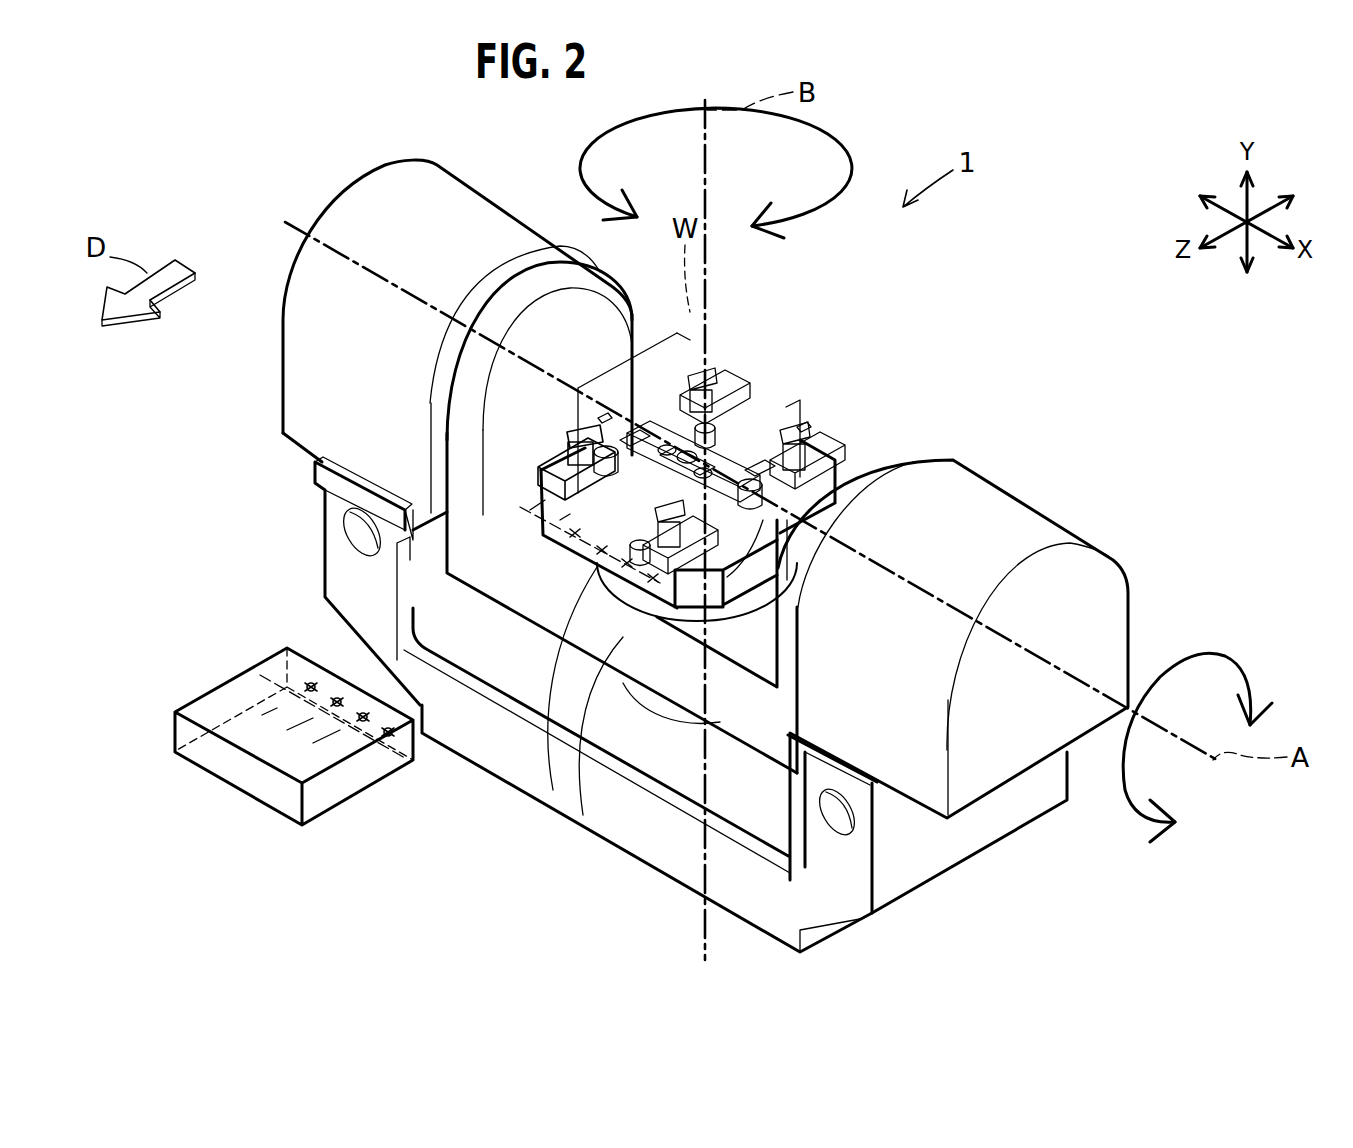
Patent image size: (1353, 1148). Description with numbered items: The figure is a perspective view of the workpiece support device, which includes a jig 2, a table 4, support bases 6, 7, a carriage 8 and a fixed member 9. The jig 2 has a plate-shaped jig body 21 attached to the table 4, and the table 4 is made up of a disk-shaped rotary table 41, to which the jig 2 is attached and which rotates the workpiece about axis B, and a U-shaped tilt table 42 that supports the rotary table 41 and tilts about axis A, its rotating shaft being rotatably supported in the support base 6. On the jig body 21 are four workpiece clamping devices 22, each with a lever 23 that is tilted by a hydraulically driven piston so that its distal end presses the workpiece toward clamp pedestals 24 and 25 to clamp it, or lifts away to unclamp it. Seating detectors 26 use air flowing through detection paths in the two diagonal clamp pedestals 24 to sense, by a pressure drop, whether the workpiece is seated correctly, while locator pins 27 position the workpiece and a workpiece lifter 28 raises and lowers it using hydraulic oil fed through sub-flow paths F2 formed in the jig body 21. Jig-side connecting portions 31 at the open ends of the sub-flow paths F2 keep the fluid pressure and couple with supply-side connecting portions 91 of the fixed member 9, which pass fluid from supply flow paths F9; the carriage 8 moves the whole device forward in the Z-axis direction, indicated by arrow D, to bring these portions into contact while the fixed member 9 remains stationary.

The jig 2 is at (872, 452).
The table 4 is at (605, 671).
The support base 6 is at (357, 183).
The support base 7 is at (1053, 520).
The carriage 8 is at (633, 827).
The fixed member 9 is at (284, 706).
The jig body 21 is at (817, 457).
The workpiece clamping device 22 is at (557, 460).
The lever 23 is at (583, 430).
The clamp pedestal 24 is at (617, 427).
The clamp pedestal 25 is at (673, 320).
The seating detector 26 is at (593, 430).
The locator pin 27 is at (648, 307).
The workpiece lifter 28 is at (720, 440).
The jig-side connecting portion 31 is at (500, 518).
The rotary table 41 is at (558, 760).
The tilt table 42 is at (598, 752).
The supply-side connecting portion 91 is at (313, 683).
The sub-flow path F2 is at (470, 467).
The supply flow path F9 is at (267, 710).